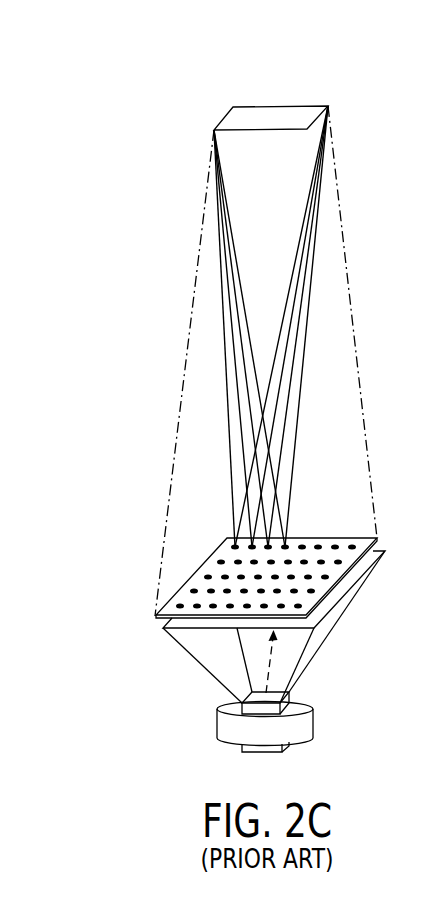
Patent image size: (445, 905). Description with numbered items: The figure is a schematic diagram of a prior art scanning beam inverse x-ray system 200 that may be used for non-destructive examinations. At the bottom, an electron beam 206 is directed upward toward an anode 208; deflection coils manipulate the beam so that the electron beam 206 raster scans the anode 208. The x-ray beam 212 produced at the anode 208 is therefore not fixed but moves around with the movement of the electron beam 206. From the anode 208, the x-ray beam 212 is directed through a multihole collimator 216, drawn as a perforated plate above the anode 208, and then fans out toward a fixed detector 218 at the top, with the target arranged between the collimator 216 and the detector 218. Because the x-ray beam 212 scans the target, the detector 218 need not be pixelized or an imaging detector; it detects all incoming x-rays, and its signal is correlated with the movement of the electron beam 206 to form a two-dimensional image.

The x-ray system 200 is at (331, 70).
The electron beam 206 is at (268, 668).
The anode 208 is at (327, 614).
The x-ray beam 212 is at (313, 257).
The multihole collimator 216 is at (343, 575).
The fixed detector 218 is at (264, 114).